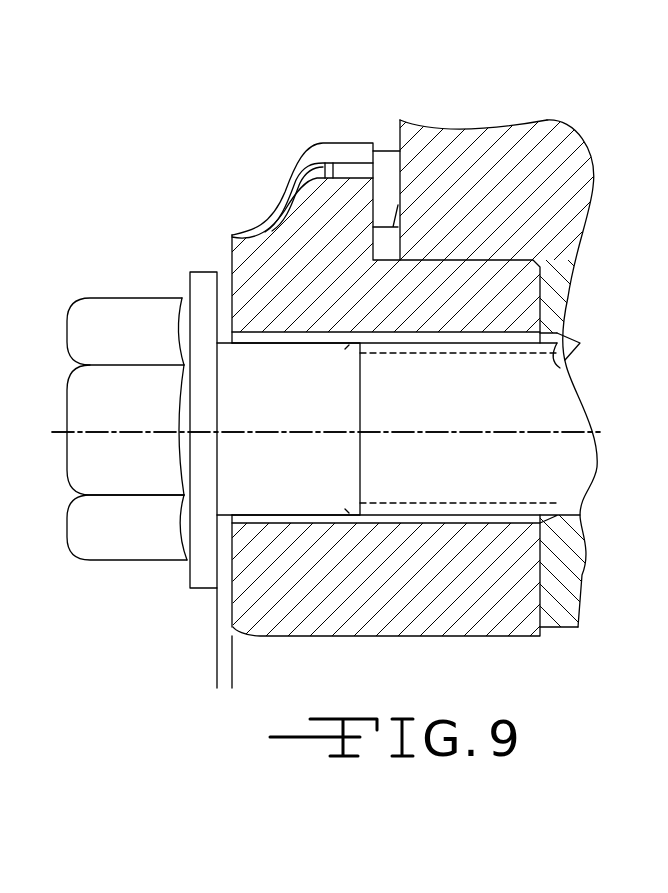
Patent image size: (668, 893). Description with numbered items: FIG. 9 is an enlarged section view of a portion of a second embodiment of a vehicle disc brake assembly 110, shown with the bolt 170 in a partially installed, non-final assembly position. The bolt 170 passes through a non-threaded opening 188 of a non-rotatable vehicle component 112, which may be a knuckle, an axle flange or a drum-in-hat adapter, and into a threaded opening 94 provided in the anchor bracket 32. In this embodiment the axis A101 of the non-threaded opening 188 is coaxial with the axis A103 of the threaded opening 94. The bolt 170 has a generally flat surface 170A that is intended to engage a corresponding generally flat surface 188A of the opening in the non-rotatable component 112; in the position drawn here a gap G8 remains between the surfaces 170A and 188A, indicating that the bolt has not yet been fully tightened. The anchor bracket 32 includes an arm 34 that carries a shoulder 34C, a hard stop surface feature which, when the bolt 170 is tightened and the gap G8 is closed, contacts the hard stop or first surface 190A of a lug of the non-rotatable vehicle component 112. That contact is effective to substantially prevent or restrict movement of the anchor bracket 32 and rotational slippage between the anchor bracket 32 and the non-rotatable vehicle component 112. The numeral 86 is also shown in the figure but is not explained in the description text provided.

The vehicle disc brake assembly 110 is at (453, 100).
The first surface of lug 190A is at (483, 260).
The arm 34 is at (558, 180).
The generally flat surface 170A is at (233, 300).
The bolt 170 is at (123, 288).
The threaded opening 94 is at (568, 368).
The shoulder 34C is at (433, 263).
The sleeve 86 is at (475, 313).
The axis of non-threaded opening A101 is at (518, 430).
The axis of threaded opening A103 is at (357, 414).
The non-threaded opening 188 is at (493, 520).
The anchor bracket 32 is at (590, 578).
The non-rotatable vehicle component 112 is at (468, 640).
The generally flat surface of opening 188A is at (232, 600).
The gap G8 is at (232, 668).